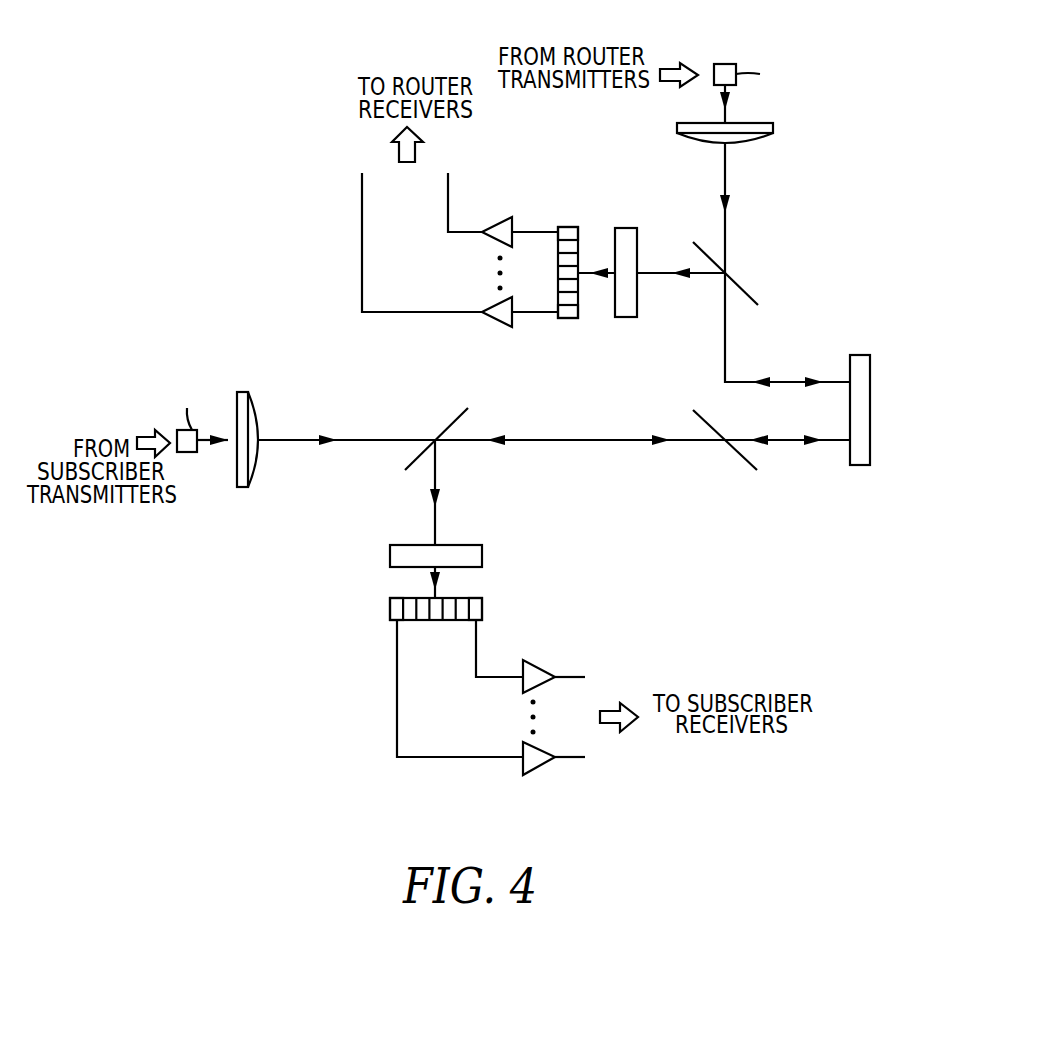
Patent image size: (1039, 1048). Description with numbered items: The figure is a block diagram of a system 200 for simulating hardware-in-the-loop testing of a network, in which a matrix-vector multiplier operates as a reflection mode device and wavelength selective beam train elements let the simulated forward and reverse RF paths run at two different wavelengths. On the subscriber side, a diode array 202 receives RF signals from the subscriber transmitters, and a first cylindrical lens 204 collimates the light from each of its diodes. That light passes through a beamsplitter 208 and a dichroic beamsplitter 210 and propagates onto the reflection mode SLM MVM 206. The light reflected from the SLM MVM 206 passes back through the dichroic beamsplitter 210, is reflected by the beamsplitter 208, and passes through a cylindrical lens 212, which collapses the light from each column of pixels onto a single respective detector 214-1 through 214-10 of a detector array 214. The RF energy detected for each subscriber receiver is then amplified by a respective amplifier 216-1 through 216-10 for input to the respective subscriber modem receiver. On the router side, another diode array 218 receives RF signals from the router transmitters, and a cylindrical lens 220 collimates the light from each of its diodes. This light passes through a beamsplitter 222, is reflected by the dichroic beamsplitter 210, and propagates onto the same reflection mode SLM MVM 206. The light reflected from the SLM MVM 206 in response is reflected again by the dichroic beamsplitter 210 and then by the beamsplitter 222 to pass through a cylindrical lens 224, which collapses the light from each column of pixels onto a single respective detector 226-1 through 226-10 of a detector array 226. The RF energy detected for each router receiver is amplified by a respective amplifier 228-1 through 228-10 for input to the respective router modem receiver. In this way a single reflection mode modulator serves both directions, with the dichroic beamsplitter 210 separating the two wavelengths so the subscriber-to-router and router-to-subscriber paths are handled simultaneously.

The system 200 is at (198, 117).
The diode array 202 is at (160, 365).
The first cylindrical lens 204 is at (245, 392).
The SLM MVM 206 is at (860, 355).
The beamsplitter 208 is at (408, 465).
The dichroic beamsplitter 210 is at (705, 412).
The cylindrical lens 212 is at (402, 545).
The detector array 214 is at (388, 636).
The detector 214-1 is at (397, 598).
The detector 214-10 is at (482, 609).
The amplifier 216-1 is at (537, 770).
The amplifier 216-10 is at (534, 664).
The diode array 218 is at (820, 58).
The cylindrical lens 220 is at (677, 128).
The beamsplitter 222 is at (818, 260).
The cylindrical lens 224 is at (575, 172).
The detector array 226 is at (567, 301).
The detector 226-1 is at (558, 235).
The detector 226-10 is at (579, 312).
The amplifier 228-1 is at (486, 245).
The amplifier 228-10 is at (486, 300).